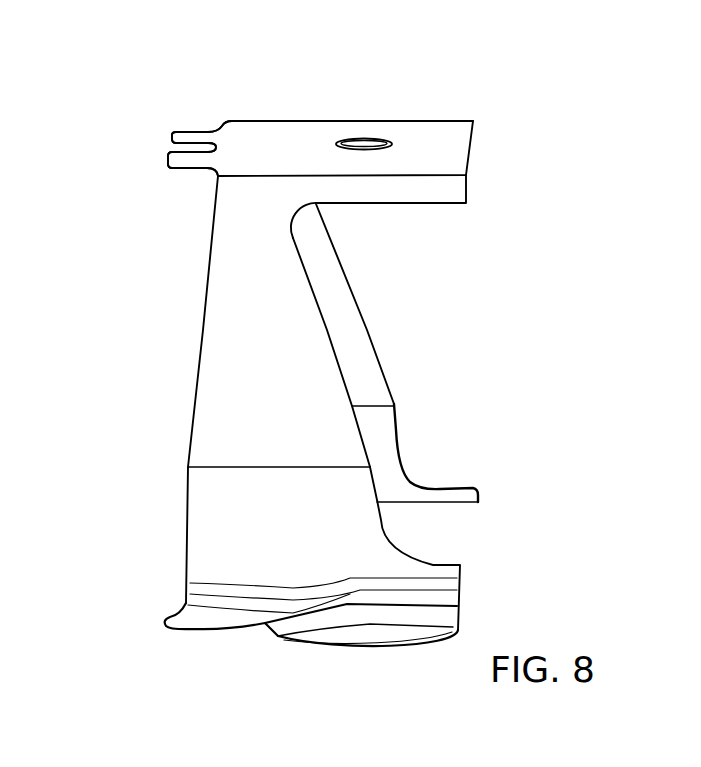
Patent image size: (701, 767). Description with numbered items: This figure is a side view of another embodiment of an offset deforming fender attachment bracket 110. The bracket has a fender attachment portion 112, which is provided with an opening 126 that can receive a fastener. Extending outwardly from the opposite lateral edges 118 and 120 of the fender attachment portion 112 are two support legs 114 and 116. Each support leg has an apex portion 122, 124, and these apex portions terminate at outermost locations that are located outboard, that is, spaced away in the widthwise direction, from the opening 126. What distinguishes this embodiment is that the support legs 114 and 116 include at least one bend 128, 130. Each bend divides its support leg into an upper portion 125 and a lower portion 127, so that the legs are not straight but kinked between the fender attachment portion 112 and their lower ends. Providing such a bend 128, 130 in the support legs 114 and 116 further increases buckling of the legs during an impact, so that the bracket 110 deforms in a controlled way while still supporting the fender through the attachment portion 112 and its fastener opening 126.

The offset deforming fender attachment bracket 110 is at (352, 334).
The fender attachment portion 112 is at (286, 133).
The support leg 114 is at (217, 466).
The support leg 116 is at (451, 452).
The lateral edge 118 is at (437, 177).
The lateral edge 120 is at (272, 130).
The apex portion 122 is at (156, 160).
The apex portion 124 is at (365, 335).
The upper portion 125 is at (140, 321).
The opening 126 is at (348, 140).
The lower portion 127 is at (254, 583).
The bend 128 is at (250, 467).
The bend 130 is at (379, 405).